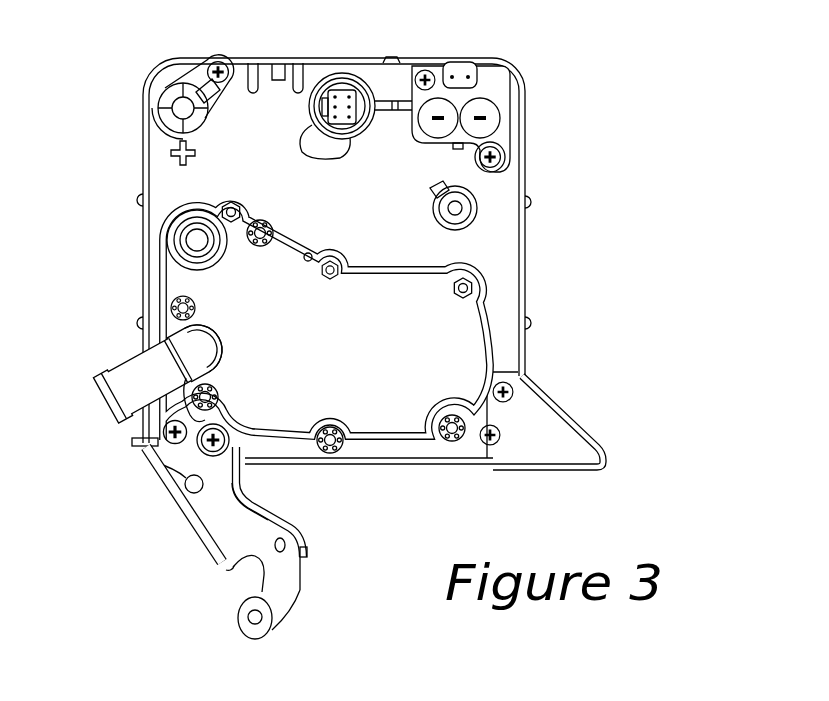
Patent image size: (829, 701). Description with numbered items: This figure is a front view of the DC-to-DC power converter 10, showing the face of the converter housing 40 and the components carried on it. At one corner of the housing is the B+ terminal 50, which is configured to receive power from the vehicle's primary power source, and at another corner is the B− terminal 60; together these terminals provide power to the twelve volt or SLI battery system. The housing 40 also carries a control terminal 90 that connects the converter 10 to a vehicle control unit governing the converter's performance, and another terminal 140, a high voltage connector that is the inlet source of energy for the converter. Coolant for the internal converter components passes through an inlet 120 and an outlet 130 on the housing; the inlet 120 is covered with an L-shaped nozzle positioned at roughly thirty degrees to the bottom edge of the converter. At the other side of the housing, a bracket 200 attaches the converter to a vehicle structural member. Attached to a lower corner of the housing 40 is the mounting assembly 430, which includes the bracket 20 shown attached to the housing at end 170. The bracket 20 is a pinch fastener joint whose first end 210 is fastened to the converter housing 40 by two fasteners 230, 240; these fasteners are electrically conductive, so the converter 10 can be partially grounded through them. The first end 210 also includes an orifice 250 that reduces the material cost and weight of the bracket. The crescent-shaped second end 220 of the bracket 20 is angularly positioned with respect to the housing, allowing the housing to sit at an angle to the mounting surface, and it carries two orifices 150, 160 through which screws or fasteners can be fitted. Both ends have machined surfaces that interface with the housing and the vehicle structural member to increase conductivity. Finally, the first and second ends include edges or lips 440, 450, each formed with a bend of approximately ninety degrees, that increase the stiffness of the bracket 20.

The power converter 10 is at (349, 356).
The bracket 20 is at (260, 530).
The converter housing 40 is at (527, 240).
The B+ terminal 50 is at (173, 102).
The B− terminal 60 is at (448, 222).
The control terminal 90 is at (346, 90).
The inlet 120 is at (205, 340).
The outlet 130 is at (196, 240).
The terminal 140 is at (461, 68).
The orifice 150 is at (284, 545).
The orifice 160 is at (250, 620).
The end 170 is at (155, 413).
The bracket 200 is at (556, 426).
The first end 210 is at (218, 393).
The second end 220 is at (290, 590).
The fastener 230 is at (150, 446).
The fastener 240 is at (240, 416).
The orifice 250 is at (175, 465).
The mounting assembly 430 is at (214, 570).
The edge 440 is at (202, 542).
The edge 450 is at (256, 500).